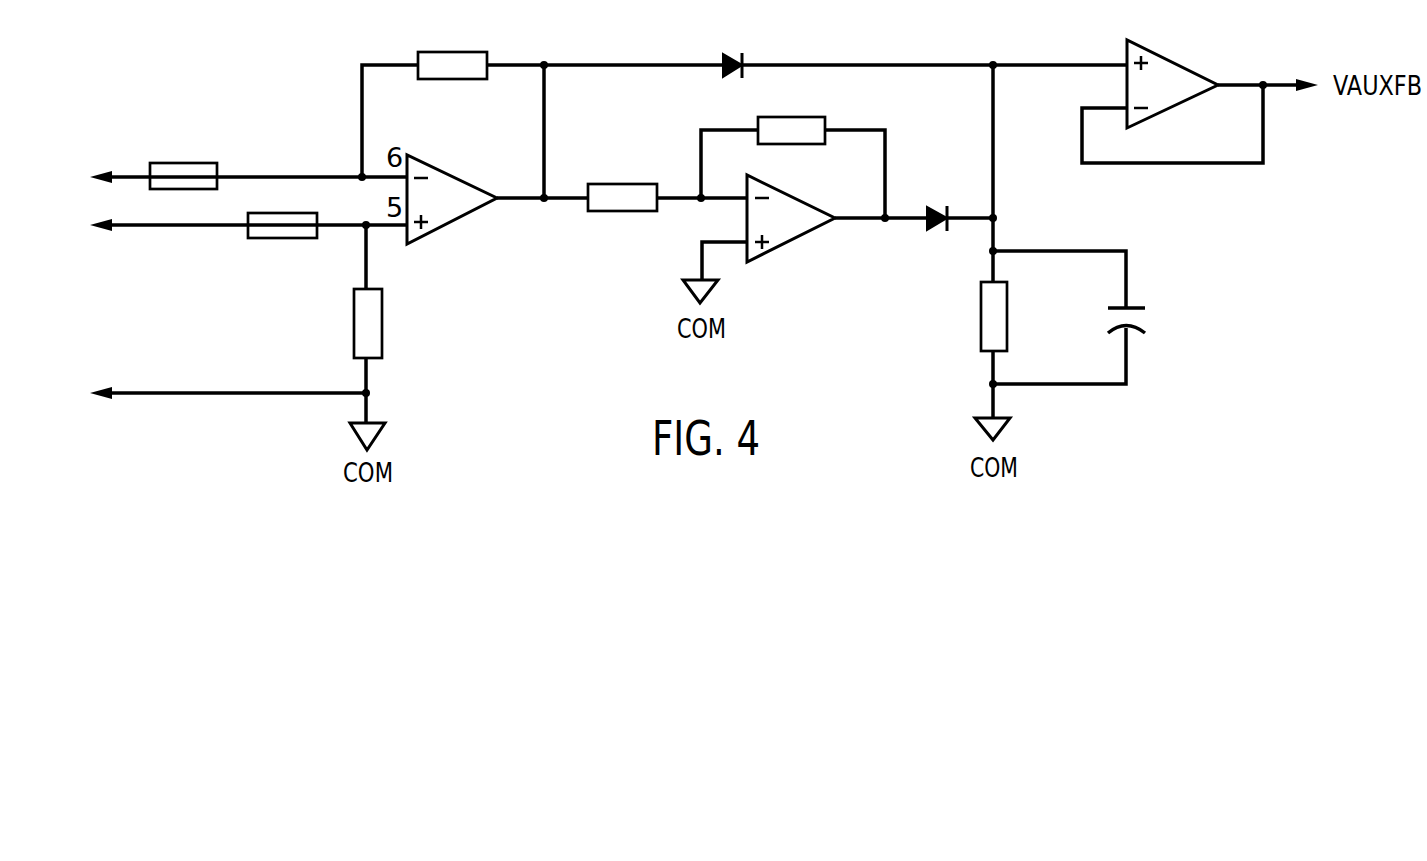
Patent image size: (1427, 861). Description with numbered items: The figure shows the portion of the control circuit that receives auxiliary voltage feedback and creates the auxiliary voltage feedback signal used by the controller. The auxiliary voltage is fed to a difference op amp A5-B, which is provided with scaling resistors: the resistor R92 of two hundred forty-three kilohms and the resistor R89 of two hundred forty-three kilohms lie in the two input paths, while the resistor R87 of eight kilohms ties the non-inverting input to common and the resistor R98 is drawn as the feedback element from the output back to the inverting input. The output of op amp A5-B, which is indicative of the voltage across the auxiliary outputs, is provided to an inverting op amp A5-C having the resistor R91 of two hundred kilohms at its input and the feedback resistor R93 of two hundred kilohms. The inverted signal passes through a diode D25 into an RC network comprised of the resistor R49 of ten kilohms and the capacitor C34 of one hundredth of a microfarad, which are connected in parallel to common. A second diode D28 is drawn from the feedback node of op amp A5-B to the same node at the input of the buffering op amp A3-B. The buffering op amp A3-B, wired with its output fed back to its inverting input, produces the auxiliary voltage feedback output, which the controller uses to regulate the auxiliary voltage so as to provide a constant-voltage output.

The feedback resistor 8K R98 is at (452, 68).
The scaling resistor R92 is at (191, 158).
The scaling resistor R89 is at (282, 227).
The scaling resistor R87 is at (361, 323).
The difference op amp A5-B is at (453, 209).
The resistor R91 is at (628, 199).
The resistor R93 is at (798, 132).
The inverting op amp A5-C is at (793, 228).
The diode D28 is at (733, 47).
The diode D25 is at (937, 200).
The resistor R49 is at (992, 318).
The capacitor C34 is at (1138, 311).
The buffering op amp A3-B is at (1173, 94).